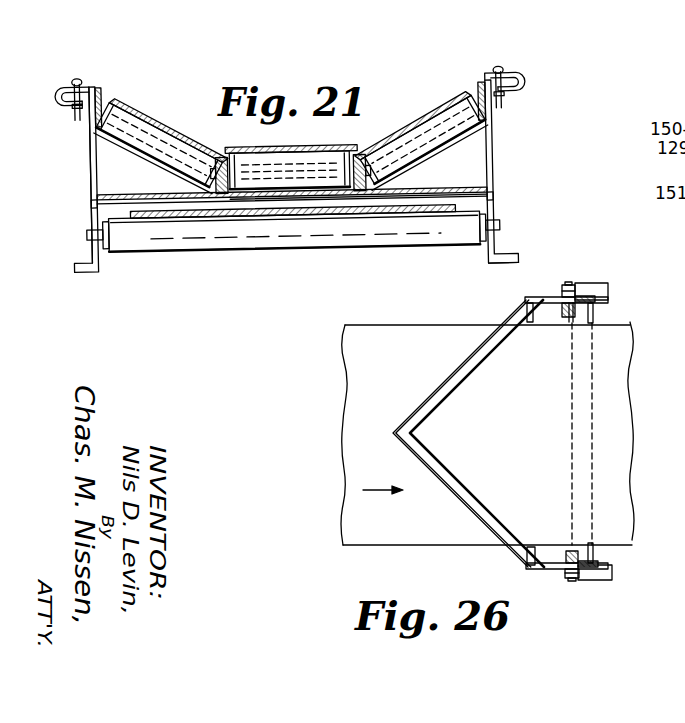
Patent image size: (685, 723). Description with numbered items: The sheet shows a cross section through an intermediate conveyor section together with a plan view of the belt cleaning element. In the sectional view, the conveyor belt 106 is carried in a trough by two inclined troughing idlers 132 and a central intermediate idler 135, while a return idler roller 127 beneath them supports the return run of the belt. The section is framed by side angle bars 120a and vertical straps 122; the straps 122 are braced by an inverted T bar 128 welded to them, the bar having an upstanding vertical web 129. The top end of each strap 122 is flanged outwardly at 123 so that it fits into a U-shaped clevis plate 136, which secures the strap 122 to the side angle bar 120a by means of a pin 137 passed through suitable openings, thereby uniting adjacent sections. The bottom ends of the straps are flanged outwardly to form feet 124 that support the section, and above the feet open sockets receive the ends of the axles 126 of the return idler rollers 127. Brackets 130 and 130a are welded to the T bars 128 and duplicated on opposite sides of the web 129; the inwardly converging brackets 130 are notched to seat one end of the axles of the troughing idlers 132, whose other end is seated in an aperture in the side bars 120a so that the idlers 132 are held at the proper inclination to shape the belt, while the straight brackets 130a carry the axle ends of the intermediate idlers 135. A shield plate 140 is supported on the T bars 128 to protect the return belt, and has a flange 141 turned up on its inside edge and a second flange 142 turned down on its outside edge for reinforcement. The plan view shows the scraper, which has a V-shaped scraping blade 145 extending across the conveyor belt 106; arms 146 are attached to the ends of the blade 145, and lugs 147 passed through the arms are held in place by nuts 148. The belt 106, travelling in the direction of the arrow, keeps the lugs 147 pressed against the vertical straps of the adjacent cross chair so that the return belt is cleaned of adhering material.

In FIG. 21, the conveyor belt 106 is at (163, 221).
In FIG. 26, the conveyor belt 106 is at (345, 393).
In FIG. 21, the side angle bars 120a is at (100, 88).
In FIG. 21, the straps 122 is at (92, 137).
In FIG. 26, the straps 122 is at (608, 301).
In FIG. 21, the flanged top end of strap 123 is at (518, 92).
In FIG. 21, the feet 124 is at (512, 252).
In FIG. 21, the axles of return idler rollers 126 is at (85, 233).
In FIG. 21, the return idler rollers 127 is at (252, 237).
In FIG. 26, the return idler rollers 127 is at (610, 316).
In FIG. 21, the inverted T bars 128 is at (353, 197).
In FIG. 21, the vertical web 129 is at (130, 182).
In FIG. 21, the brackets 130 is at (232, 168).
In FIG. 21, the brackets 130a is at (363, 157).
In FIG. 21, the troughing idlers 132 is at (125, 108).
In FIG. 21, the intermediate idlers 135 is at (308, 180).
In FIG. 21, the U-shaped clevis plates 136 is at (62, 92).
In FIG. 21, the pins 137 is at (77, 76).
In FIG. 21, the shield plates 140 is at (123, 195).
In FIG. 21, the flange 141 is at (213, 190).
In FIG. 21, the second flange 142 is at (92, 201).
In FIG. 26, the V-shaped scraping blade 145 is at (467, 370).
In FIG. 26, the arms 146 is at (546, 297).
In FIG. 26, the lugs 147 is at (566, 308).
In FIG. 26, the nuts 148 is at (575, 292).